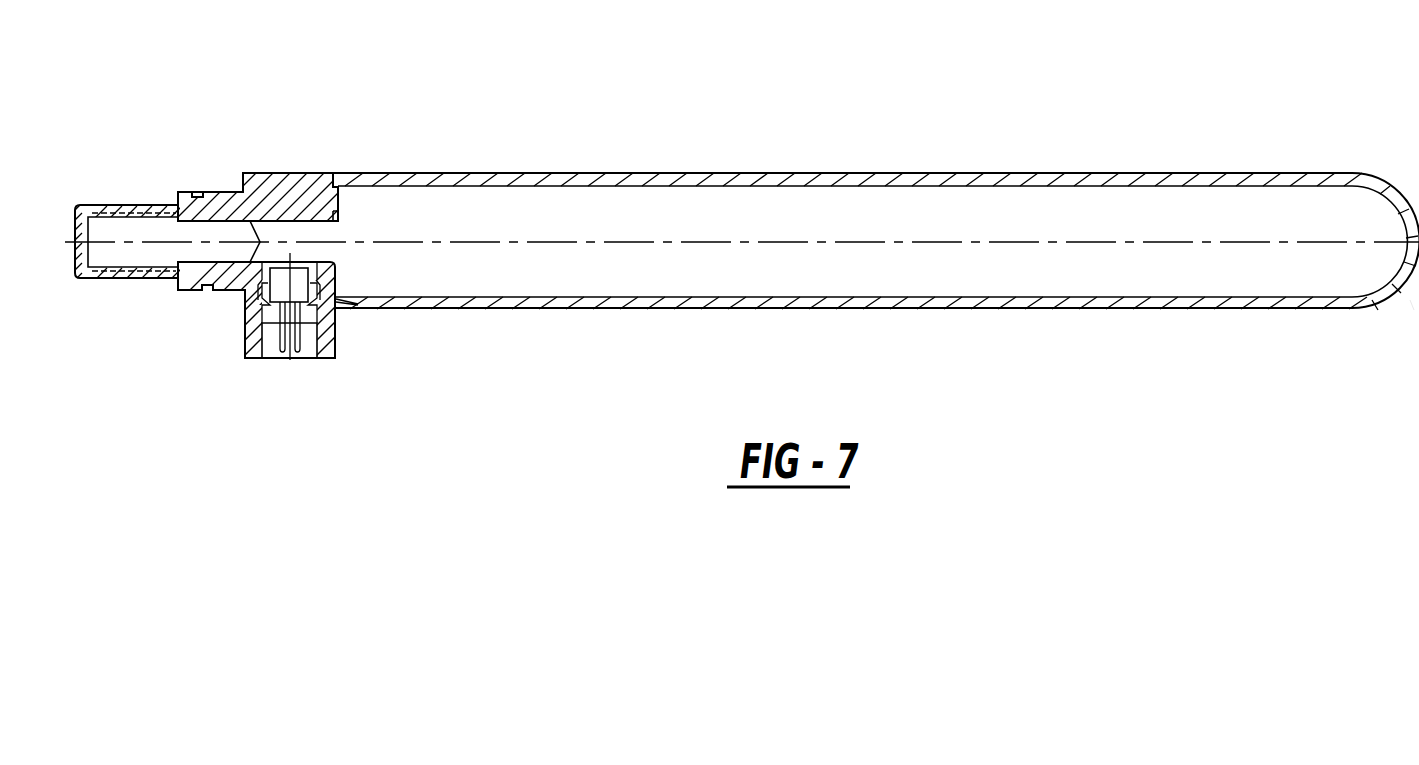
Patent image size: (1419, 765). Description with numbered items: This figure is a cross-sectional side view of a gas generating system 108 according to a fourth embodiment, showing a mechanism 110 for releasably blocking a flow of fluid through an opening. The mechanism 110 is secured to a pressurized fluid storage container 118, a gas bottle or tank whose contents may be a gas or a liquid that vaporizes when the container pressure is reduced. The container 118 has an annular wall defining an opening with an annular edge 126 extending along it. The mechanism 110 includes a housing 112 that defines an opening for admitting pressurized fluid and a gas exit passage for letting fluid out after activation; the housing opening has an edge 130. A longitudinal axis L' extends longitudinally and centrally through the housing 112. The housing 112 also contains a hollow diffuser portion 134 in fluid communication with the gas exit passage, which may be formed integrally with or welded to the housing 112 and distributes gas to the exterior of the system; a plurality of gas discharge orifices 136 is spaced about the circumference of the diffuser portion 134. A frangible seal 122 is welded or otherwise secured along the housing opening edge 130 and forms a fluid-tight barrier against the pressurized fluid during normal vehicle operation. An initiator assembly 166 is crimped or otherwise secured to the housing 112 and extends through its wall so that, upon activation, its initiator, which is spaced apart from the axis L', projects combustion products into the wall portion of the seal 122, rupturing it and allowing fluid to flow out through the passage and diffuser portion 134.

The gas generating system 108 is at (742, 330).
The mechanism 110 is at (291, 113).
The housing 112 is at (210, 119).
The pressurized fluid storage container 118 is at (876, 186).
The frangible seal 122 is at (252, 339).
The annular edge 126 is at (429, 352).
The edge 130 is at (423, 146).
The diffuser portion 134 is at (126, 289).
The gas discharge orifices 136 is at (858, 185).
The initiator assembly 166 is at (334, 352).
The longitudinal axis L' is at (1401, 354).